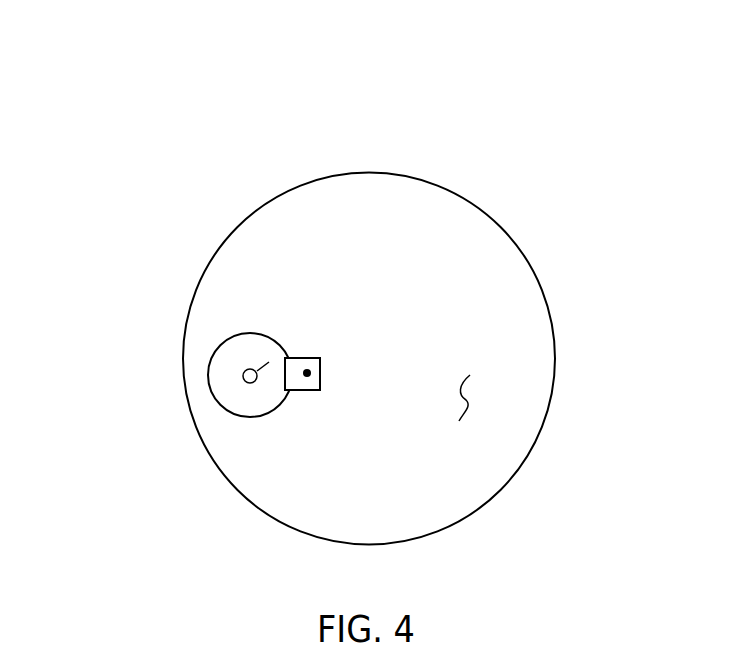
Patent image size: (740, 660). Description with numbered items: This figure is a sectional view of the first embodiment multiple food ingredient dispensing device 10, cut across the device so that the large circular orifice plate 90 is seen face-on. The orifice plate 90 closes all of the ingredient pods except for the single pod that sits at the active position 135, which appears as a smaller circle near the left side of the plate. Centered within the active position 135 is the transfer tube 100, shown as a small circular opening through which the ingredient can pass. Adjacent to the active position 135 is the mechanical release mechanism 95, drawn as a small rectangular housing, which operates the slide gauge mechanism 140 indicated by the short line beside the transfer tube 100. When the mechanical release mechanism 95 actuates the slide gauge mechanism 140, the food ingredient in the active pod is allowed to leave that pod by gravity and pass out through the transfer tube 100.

The multiple food ingredient dispensing device 10 is at (195, 185).
The orifice plate 90 is at (468, 403).
The active position 135 is at (213, 352).
The mechanical release mechanism 95 is at (310, 387).
The transfer tube 100 is at (246, 381).
The slide gauge mechanism 140 is at (268, 387).